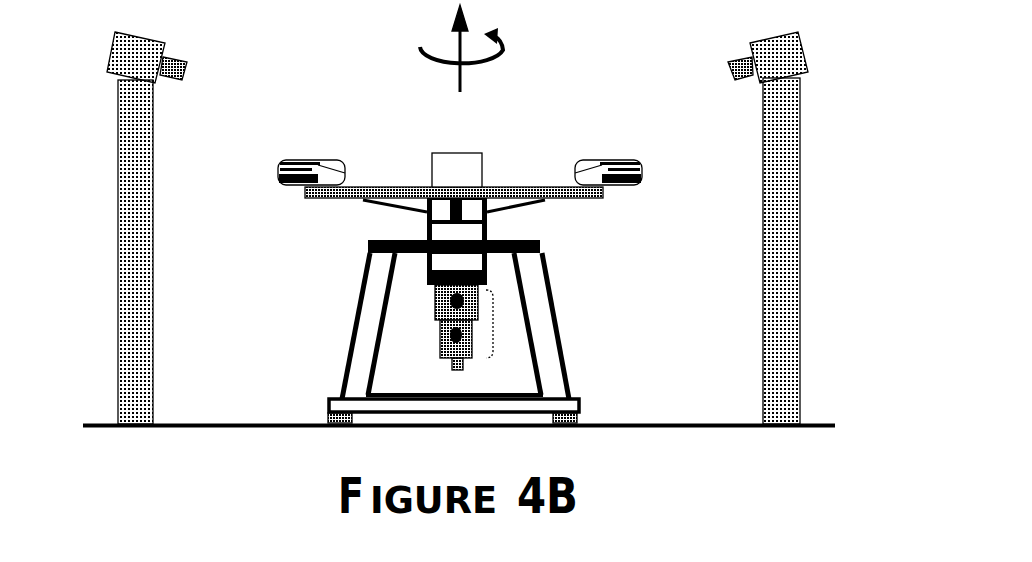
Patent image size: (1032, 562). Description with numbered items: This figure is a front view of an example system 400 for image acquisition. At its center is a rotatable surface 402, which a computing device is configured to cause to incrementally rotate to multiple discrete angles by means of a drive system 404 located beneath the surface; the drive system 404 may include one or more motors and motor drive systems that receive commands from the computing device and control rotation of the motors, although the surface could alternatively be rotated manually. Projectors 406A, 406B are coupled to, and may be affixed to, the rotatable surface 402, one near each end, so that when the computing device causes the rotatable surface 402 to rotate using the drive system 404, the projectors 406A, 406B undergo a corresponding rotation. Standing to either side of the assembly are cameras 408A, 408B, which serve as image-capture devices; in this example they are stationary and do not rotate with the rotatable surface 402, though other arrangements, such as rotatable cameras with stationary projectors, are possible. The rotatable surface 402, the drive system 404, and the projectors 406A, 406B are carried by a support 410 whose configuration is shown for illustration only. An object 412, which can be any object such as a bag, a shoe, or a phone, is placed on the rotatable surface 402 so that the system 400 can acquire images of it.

The system for image acquisition 400 is at (318, 81).
The rotatable surface 402 is at (395, 186).
The drive system 404 is at (493, 323).
The projector 406A is at (642, 177).
The projector 406B is at (278, 178).
The camera 408A is at (808, 52).
The camera 408B is at (112, 52).
The support 410 is at (353, 337).
The object 412 is at (482, 168).